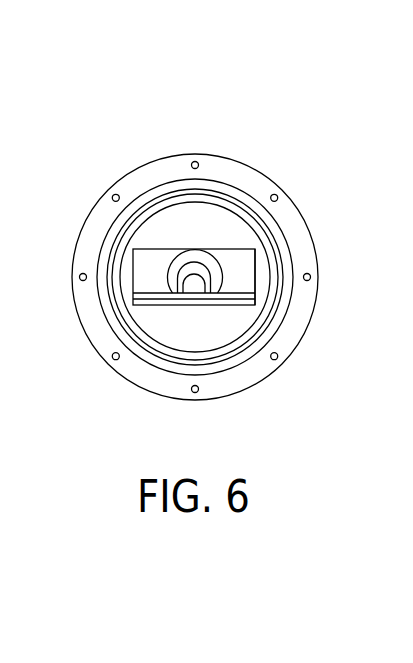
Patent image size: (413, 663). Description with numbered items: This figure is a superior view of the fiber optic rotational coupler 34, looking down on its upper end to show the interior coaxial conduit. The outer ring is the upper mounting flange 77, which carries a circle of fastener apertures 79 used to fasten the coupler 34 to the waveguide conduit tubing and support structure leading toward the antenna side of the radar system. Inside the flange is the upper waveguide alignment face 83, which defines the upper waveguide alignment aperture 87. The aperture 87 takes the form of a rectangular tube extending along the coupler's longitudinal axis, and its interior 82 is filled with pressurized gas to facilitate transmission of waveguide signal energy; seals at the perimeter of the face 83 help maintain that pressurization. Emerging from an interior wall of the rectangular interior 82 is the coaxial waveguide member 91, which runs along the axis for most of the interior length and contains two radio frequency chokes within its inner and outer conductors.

The fiber optic rotational coupler 34 is at (270, 128).
The upper mounting flange 77 is at (303, 240).
The fastener apertures 79 is at (279, 193).
The interior 82 is at (157, 263).
The upper waveguide alignment face 83 is at (213, 320).
The upper waveguide alignment aperture 87 is at (270, 281).
The coaxial waveguide member 91 is at (152, 281).